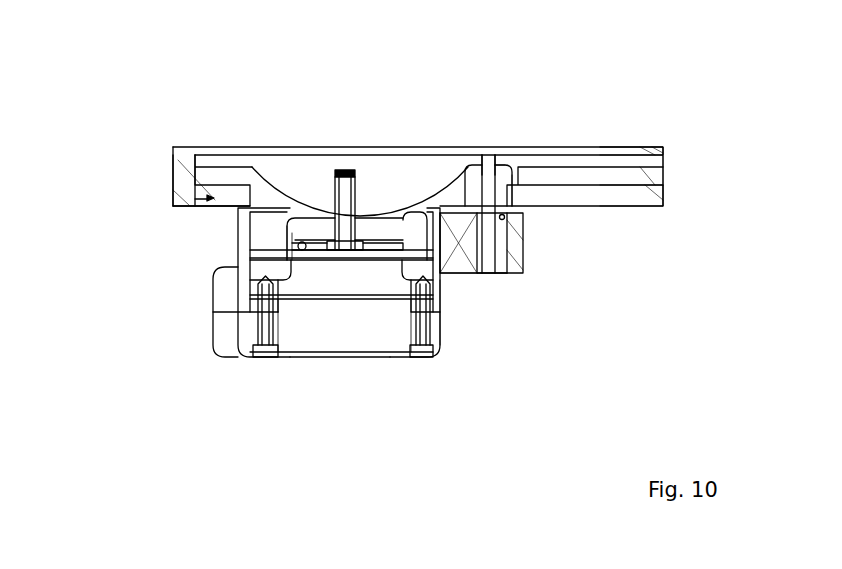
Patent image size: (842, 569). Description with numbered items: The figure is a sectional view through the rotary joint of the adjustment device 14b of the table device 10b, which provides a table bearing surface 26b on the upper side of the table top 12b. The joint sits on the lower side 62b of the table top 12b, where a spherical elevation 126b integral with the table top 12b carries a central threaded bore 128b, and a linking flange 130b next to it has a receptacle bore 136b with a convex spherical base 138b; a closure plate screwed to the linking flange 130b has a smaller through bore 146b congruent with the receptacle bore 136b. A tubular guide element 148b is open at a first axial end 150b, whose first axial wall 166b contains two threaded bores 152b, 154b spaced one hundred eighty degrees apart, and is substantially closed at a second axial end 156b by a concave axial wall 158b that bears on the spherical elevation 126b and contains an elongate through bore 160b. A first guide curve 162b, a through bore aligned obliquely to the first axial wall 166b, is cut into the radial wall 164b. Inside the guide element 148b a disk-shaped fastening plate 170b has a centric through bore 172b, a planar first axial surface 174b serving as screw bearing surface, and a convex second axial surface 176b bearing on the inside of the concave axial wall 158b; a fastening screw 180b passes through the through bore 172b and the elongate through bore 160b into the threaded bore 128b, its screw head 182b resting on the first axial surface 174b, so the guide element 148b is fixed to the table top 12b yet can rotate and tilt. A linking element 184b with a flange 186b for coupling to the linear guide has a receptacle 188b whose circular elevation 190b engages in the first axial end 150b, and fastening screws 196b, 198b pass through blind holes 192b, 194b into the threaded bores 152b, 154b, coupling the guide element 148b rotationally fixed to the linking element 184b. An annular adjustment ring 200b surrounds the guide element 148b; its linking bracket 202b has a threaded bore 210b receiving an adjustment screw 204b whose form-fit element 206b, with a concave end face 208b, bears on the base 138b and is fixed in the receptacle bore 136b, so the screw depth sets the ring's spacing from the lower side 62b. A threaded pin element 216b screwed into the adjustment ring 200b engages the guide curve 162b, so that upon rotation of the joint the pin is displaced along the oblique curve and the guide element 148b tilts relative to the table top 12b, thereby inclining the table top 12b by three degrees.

The table device 10b is at (668, 127).
The table top 12b is at (661, 156).
The adjustment device 14b is at (182, 220).
The table bearing surface 26b is at (644, 152).
The lower side 62b is at (647, 186).
The elevation 126b is at (272, 180).
The threaded bore 128b is at (320, 215).
The linking flange 130b is at (508, 168).
The receptacle bore 136b is at (500, 160).
The base 138b is at (486, 172).
The through bore 146b is at (525, 178).
The guide element 148b is at (178, 152).
The first axial end 150b is at (452, 330).
The threaded bore 152b is at (245, 303).
The threaded bore 154b is at (450, 311).
The second axial end 156b is at (170, 178).
The axial wall 158b is at (390, 240).
The through bore 160b is at (352, 170).
The first guide curve 162b is at (400, 345).
The radial wall 164b is at (440, 250).
The first axial wall 166b is at (262, 330).
The fastening plate 170b is at (285, 228).
The through bore 172b is at (348, 332).
The first axial surface 174b is at (327, 330).
The second axial surface 176b is at (366, 215).
The fastening screw 180b is at (337, 200).
The screw head 182b is at (343, 332).
The linking element 184b is at (262, 345).
The flange 186b is at (205, 322).
The receptacle 188b is at (298, 352).
The circular elevation 190b is at (295, 332).
The blind hole 192b is at (233, 360).
The blind hole 194b is at (434, 332).
The fastening screw 196b is at (265, 372).
The fastening screw 198b is at (425, 372).
The adjustment ring 200b is at (283, 258).
The linking bracket 202b is at (524, 226).
The adjustment screw 204b is at (505, 276).
The form-fit element 206b is at (500, 163).
The concave end face 208b is at (471, 166).
The threaded bore 210b is at (524, 260).
The threaded pin element 216b is at (287, 215).